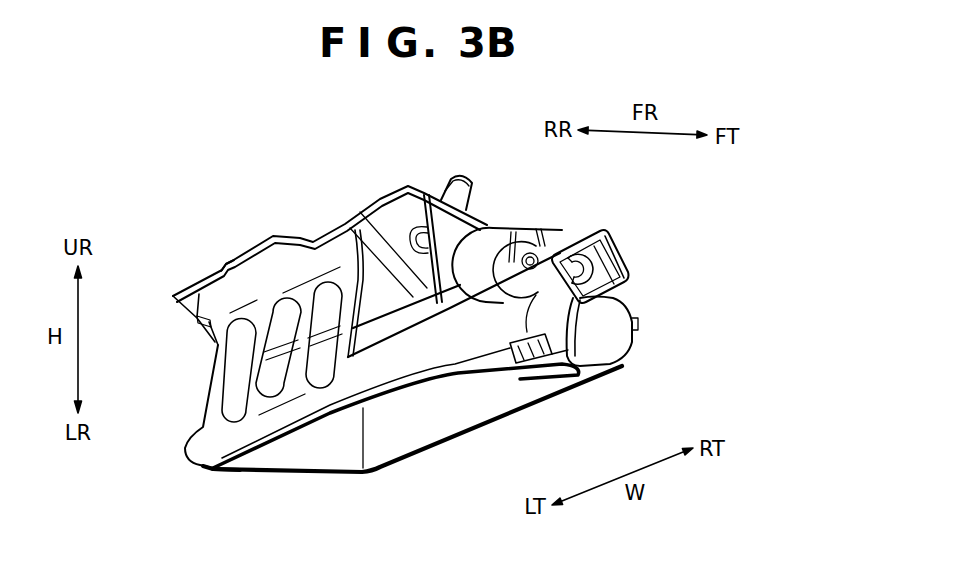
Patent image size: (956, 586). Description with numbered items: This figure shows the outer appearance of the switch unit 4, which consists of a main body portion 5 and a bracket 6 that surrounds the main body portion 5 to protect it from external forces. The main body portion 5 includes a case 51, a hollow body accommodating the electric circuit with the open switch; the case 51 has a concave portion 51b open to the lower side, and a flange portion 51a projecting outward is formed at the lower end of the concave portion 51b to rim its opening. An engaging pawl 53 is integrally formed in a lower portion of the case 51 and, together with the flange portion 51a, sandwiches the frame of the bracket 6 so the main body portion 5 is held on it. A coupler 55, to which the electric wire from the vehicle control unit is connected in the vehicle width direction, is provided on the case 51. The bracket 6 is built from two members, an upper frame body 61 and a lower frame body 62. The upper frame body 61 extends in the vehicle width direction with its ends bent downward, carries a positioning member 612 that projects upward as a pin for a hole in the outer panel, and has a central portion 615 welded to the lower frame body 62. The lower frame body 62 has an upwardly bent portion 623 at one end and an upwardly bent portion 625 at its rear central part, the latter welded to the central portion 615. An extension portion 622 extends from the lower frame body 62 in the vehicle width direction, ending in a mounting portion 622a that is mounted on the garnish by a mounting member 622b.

The switch unit 4 is at (683, 362).
The main body portion 5 is at (318, 487).
The case 51 is at (395, 318).
The flange portion 51a is at (227, 478).
The concave portion 51b is at (425, 432).
The engaging pawl 53 is at (530, 344).
The coupler 55 is at (497, 250).
The bracket 6 is at (172, 266).
The upper frame body 61 is at (363, 207).
The positioning member 612 is at (448, 175).
The central portion 615 is at (273, 240).
The lower frame body 62 is at (218, 372).
The extension portion 622 is at (552, 268).
The mounting portion 622a is at (641, 252).
The mounting member 622b is at (566, 250).
The bent-up portion 623 is at (612, 307).
The bent-up portion 625 is at (250, 270).